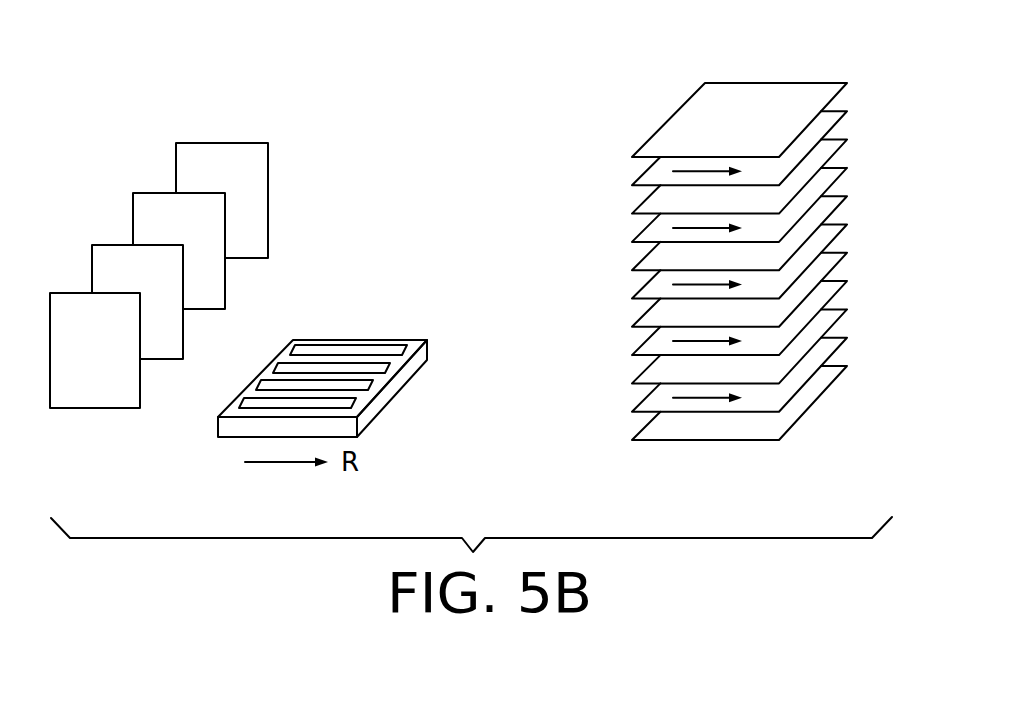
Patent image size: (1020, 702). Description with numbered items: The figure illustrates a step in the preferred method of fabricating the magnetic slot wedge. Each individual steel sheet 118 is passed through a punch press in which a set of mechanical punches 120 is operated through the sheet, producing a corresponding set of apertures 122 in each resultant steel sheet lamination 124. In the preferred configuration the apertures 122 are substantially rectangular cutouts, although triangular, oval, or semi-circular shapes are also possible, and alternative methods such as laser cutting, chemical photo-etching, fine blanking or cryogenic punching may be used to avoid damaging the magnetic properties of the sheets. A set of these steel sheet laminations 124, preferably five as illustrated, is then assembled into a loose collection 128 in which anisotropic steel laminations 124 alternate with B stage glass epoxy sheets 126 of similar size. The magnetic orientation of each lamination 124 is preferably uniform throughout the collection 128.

The steel sheet 118 is at (336, 331).
The mechanical punches 120 is at (106, 226).
The apertures 122 is at (415, 343).
The steel sheet lamination 124 is at (836, 110).
The B stage glass epoxy sheets 126 is at (635, 141).
The loose collection 128 is at (756, 66).